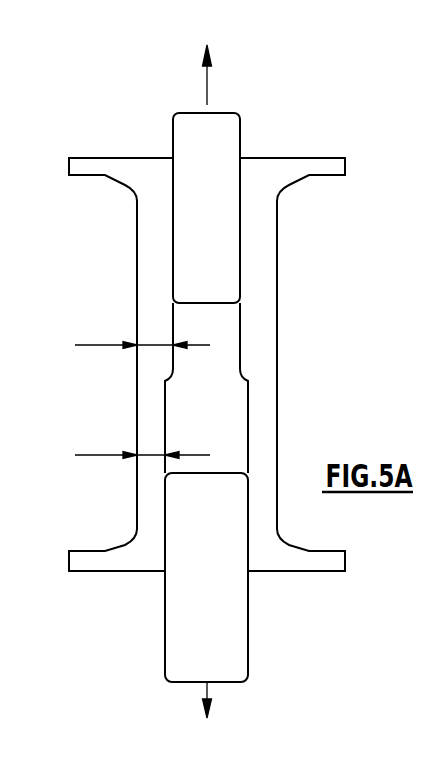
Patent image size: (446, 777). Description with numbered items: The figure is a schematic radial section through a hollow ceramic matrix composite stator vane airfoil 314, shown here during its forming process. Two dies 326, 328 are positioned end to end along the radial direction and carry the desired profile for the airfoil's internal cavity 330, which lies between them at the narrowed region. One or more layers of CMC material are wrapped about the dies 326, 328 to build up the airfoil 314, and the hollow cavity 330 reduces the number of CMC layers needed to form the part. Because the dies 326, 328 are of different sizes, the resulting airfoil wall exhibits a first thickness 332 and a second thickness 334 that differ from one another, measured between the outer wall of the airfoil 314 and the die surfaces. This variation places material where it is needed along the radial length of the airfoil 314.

The airfoil 314 is at (272, 336).
The die 326 is at (226, 268).
The die 328 is at (228, 623).
The internal cavity 330 is at (227, 428).
The first thickness 332 is at (153, 348).
The second thickness 334 is at (153, 458).